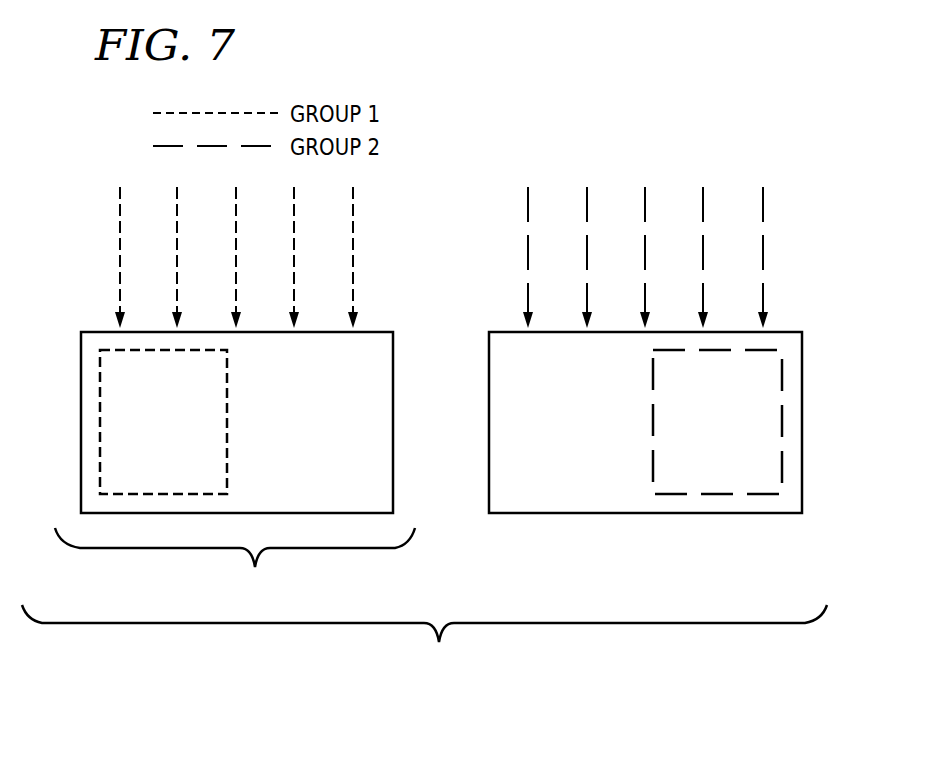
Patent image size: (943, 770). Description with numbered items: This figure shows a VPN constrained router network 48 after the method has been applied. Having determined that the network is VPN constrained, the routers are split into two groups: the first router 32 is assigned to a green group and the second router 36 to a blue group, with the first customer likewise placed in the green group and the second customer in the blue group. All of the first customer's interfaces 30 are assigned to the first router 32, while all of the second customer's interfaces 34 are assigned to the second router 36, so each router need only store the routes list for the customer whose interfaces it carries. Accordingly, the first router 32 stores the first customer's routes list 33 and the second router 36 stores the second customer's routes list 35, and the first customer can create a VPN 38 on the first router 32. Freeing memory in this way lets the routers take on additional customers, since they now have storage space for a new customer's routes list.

The customer 1 interfaces 30 is at (120, 240).
The customer 2 interfaces 34 is at (763, 240).
The router 1 32 is at (81, 415).
The routes list for customer 1 33 is at (100, 466).
The router 2 36 is at (802, 417).
The routes list for customer 2 35 is at (782, 477).
The VPN 38 is at (235, 566).
The VPN constrained router network 48 is at (424, 642).